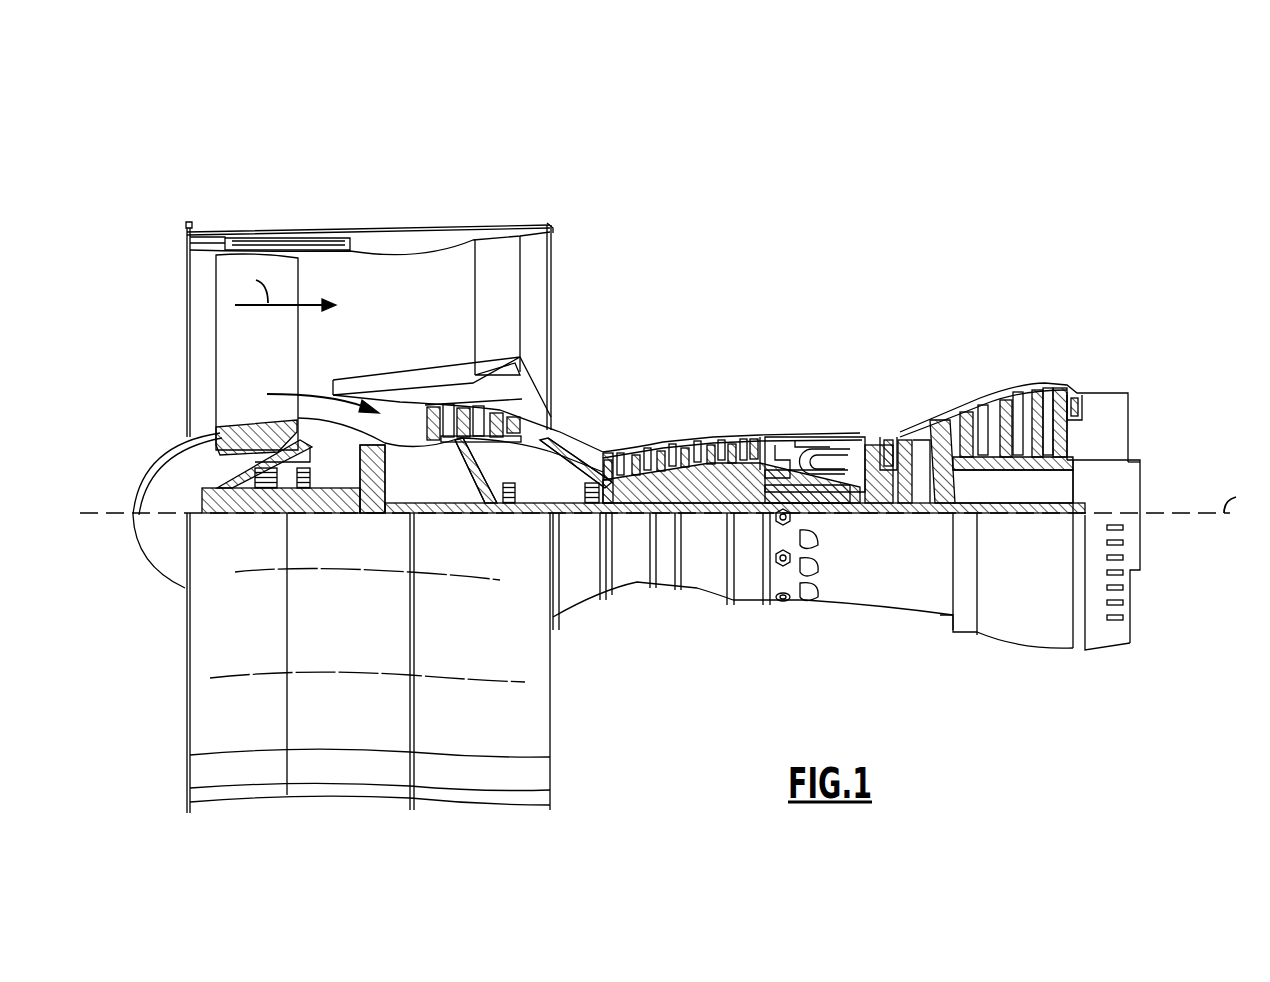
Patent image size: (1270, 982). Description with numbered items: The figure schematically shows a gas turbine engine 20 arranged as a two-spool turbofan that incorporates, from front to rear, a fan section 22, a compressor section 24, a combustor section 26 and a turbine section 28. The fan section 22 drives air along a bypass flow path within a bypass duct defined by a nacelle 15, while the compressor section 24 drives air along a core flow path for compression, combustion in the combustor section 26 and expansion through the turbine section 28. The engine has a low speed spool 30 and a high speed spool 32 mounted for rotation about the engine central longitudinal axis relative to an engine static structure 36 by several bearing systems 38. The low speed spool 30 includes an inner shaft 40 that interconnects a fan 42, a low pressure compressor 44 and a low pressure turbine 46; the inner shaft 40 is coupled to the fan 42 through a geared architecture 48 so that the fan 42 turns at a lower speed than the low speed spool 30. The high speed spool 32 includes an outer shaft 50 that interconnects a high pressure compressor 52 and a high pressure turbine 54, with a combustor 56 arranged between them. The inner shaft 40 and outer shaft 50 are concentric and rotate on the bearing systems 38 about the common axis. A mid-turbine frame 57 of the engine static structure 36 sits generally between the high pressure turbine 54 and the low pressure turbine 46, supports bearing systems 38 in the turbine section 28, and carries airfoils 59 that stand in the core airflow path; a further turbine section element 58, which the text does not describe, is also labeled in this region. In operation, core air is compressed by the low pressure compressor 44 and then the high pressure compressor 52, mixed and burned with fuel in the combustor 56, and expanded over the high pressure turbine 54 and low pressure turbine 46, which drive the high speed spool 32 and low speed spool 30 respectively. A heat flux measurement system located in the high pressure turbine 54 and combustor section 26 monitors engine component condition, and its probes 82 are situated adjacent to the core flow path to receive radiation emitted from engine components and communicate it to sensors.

The nacelle 15 is at (370, 230).
The gas turbine engine 20 is at (832, 278).
The fan section 22 is at (295, 215).
The compressor section 24 is at (604, 415).
The combustor section 26 is at (824, 398).
The turbine section 28 is at (975, 365).
The low speed spool 30 is at (706, 528).
The high speed spool 32 is at (745, 445).
The engine static structure 36 is at (748, 530).
The bearing systems 38 is at (503, 503).
The inner shaft 40 is at (560, 515).
The fan 42 is at (270, 358).
The low pressure compressor 44 is at (470, 423).
The low pressure turbine 46 is at (1073, 380).
The geared architecture 48 is at (378, 500).
The outer shaft 50 is at (830, 500).
The high pressure compressor 52 is at (683, 490).
The high pressure turbine 54 is at (885, 437).
The combustor 56 is at (822, 452).
The mid-turbine frame 57 is at (935, 412).
The turbine rotor 58 is at (1017, 418).
The airfoils 59 is at (962, 483).
The probes 82 is at (890, 436).